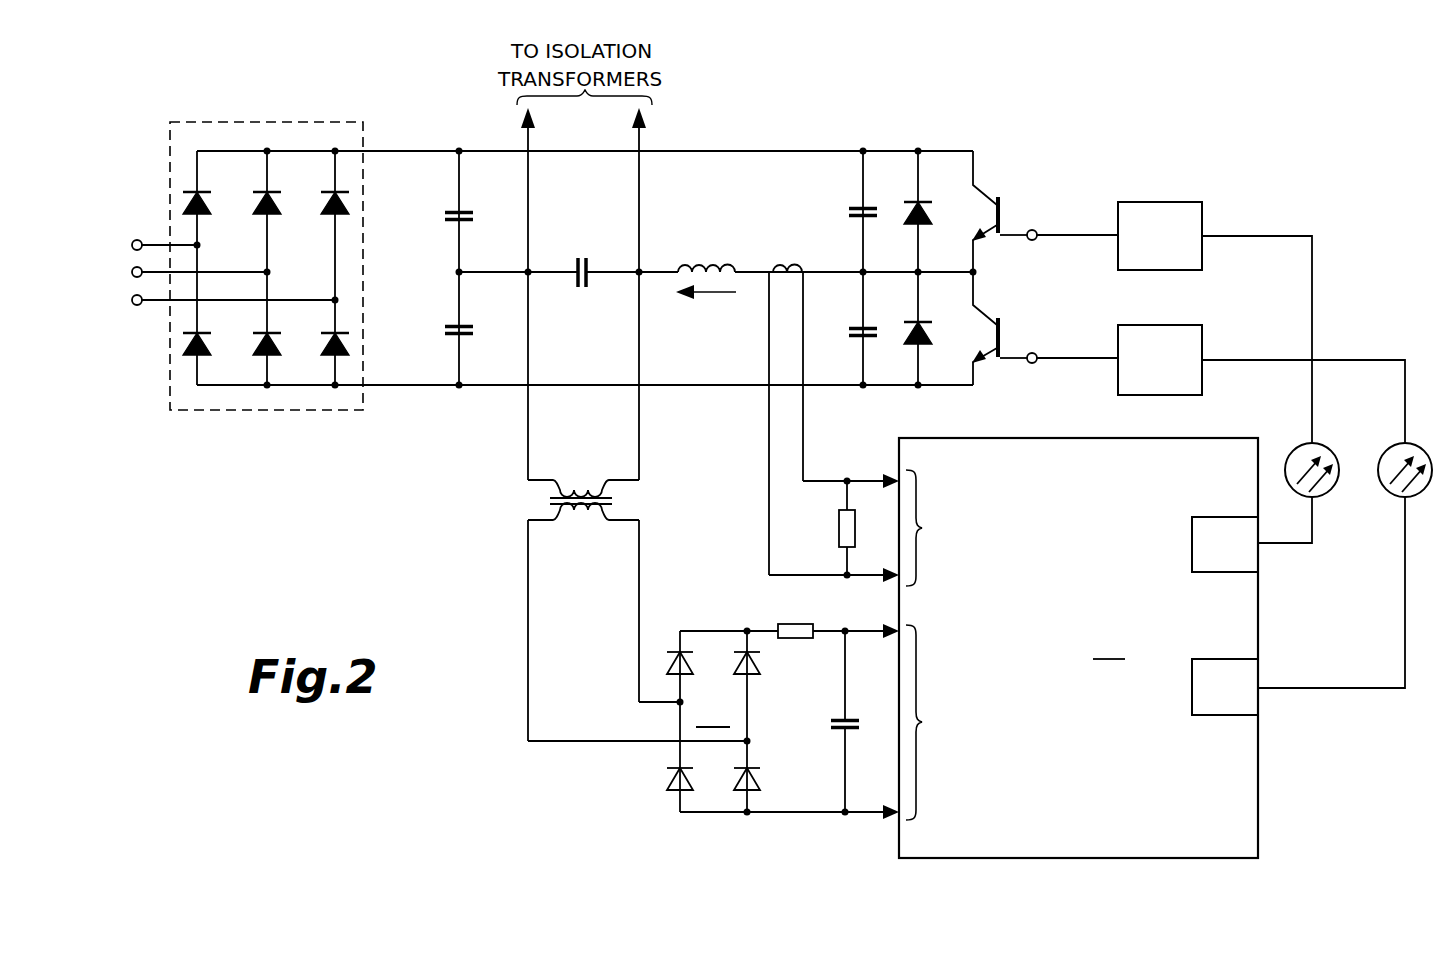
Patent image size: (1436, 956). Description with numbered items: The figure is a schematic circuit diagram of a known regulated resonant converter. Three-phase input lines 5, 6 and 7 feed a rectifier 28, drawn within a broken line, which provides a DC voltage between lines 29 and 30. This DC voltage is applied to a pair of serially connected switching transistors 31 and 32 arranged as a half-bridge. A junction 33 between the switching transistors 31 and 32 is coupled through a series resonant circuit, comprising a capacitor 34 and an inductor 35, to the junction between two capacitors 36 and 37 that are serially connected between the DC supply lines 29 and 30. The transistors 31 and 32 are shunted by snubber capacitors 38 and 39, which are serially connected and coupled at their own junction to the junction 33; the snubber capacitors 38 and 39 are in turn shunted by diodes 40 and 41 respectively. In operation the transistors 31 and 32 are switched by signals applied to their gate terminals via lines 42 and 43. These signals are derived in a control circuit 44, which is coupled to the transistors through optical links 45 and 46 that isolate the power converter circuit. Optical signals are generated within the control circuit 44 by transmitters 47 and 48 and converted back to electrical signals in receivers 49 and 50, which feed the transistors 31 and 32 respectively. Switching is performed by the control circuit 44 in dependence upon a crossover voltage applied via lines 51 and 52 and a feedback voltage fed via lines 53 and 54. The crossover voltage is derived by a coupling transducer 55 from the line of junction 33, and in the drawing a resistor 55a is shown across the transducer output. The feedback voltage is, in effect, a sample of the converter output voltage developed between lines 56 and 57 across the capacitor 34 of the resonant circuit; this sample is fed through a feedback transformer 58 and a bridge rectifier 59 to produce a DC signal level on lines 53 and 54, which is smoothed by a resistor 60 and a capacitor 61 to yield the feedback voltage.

The three-phase input line 5 is at (163, 243).
The three-phase input line 6 is at (150, 271).
The three-phase input line 7 is at (152, 305).
The rectifier 28 is at (262, 122).
The DC supply line 29 is at (410, 150).
The DC supply line 30 is at (400, 386).
The switching transistor 31 is at (1002, 198).
The switching transistor 32 is at (1002, 360).
The junction 33 is at (970, 270).
The capacitor 34 is at (586, 257).
The inductor 35 is at (686, 265).
The capacitor 36 is at (464, 213).
The capacitor 37 is at (468, 334).
The snubber capacitor 38 is at (870, 208).
The snubber capacitor 39 is at (870, 326).
The diode 40 is at (921, 202).
The diode 41 is at (921, 322).
The line 42 is at (1074, 234).
The line 43 is at (1074, 357).
The control circuit 44 is at (1078, 648).
The optical link 45 is at (1287, 468).
The optical link 46 is at (1378, 468).
The transmitter 47 is at (1217, 572).
The transmitter 48 is at (1230, 715).
The receiver 49 is at (1160, 202).
The receiver 50 is at (1203, 340).
The line 51 is at (860, 478).
The line 52 is at (863, 572).
The line 53 is at (875, 638).
The line 54 is at (875, 808).
The coupling transducer 55 is at (766, 250).
The burden resistor 10R 55a is at (838, 525).
The line 56 is at (534, 142).
The line 57 is at (645, 142).
The feedback transformer 58 is at (625, 498).
The bridge rectifier 59 is at (706, 722).
The resistor 60 is at (796, 623).
The capacitor 61 is at (842, 716).